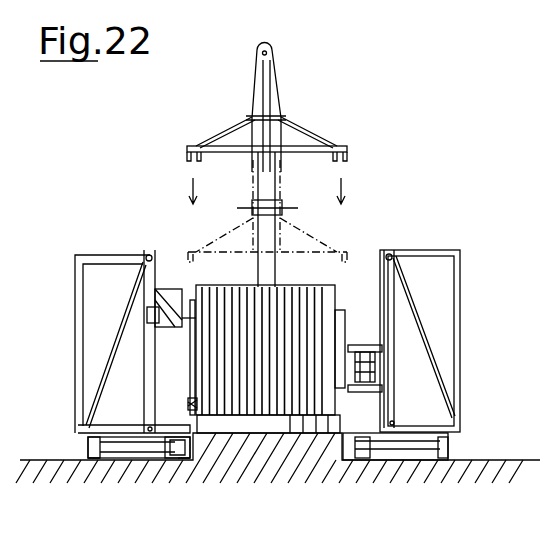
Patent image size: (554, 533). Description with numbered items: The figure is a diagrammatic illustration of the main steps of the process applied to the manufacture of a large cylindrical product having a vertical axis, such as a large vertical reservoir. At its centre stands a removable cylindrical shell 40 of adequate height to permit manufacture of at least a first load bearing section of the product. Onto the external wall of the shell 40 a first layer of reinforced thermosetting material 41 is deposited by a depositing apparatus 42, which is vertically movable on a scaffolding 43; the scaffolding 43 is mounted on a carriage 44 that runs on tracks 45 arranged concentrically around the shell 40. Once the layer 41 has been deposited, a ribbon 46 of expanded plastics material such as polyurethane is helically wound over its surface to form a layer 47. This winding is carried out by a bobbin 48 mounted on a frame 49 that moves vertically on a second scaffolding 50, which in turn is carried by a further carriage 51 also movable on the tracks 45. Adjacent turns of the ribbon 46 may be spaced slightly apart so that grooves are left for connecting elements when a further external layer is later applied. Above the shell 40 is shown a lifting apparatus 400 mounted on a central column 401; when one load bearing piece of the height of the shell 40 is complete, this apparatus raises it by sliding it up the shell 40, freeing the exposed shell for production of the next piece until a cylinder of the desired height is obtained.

The lifting apparatus 400 is at (308, 140).
The central column 401 is at (276, 271).
The removable cylindrical shell 40 is at (320, 305).
The first layer of reinforced thermosetting material 41 is at (190, 366).
The depositing apparatus 42 is at (170, 296).
The scaffolding 43 is at (147, 367).
The carriage 44 is at (120, 428).
The tracks 45 is at (88, 458).
The ribbon of expanded plastics material 46 is at (340, 350).
The layer of expanded material 47 is at (189, 398).
The bobbin 48 is at (368, 372).
The frame 49 is at (398, 335).
The second scaffolding 50 is at (388, 298).
The further carriage 51 is at (432, 420).